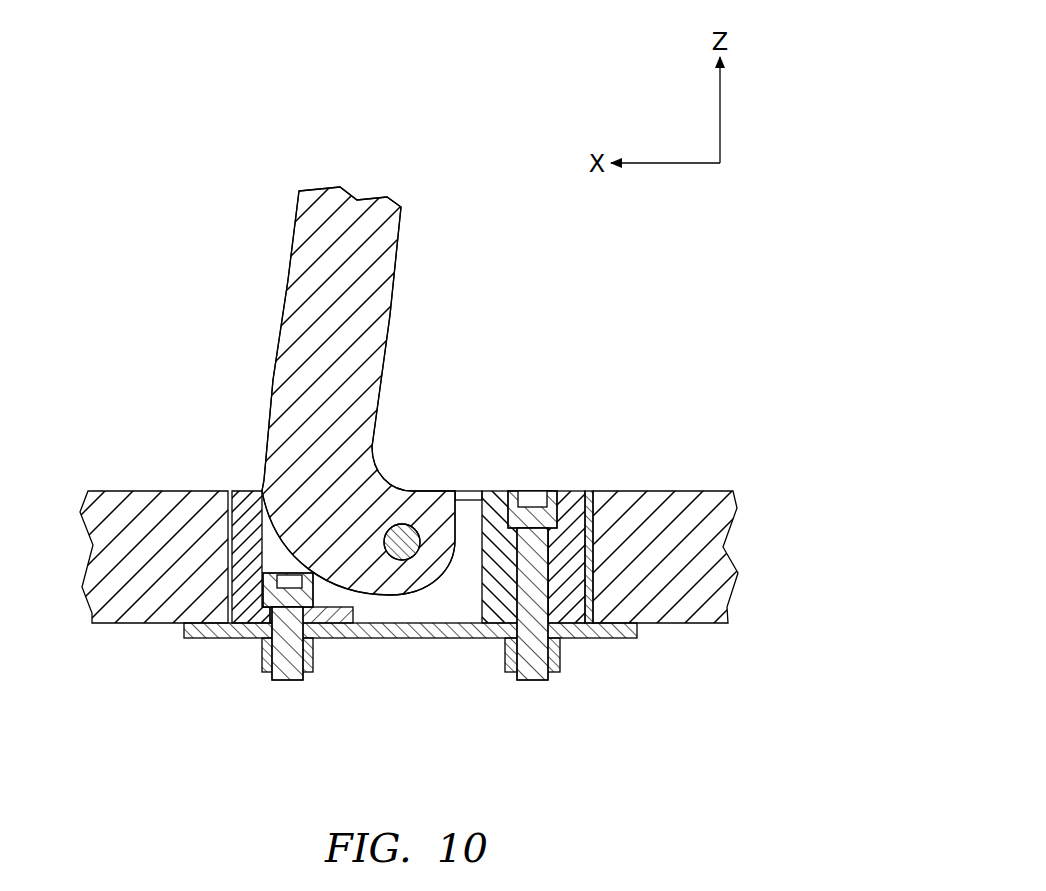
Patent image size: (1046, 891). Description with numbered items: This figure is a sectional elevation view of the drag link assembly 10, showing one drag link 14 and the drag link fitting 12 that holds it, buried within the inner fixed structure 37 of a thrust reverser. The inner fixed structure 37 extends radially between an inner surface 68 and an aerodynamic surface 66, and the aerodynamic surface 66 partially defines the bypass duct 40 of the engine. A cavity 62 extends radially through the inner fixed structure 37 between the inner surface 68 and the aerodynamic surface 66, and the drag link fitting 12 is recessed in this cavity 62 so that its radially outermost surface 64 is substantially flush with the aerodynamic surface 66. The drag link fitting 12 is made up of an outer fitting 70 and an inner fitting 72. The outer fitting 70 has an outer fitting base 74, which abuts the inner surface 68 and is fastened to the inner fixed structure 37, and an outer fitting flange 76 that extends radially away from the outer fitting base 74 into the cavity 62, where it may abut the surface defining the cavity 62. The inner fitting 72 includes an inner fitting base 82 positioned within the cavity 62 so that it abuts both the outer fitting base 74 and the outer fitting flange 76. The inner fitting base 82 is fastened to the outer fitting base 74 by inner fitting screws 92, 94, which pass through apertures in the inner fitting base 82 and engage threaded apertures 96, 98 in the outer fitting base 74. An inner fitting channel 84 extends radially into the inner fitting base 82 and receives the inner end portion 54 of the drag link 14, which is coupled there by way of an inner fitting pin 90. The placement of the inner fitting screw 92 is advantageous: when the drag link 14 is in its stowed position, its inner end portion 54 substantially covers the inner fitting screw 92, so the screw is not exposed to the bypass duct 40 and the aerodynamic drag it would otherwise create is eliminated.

The drag link assembly 10 is at (212, 307).
The drag link fitting 12 is at (478, 430).
The drag link 14 is at (407, 262).
The inner fixed structure 37 is at (162, 586).
The bypass duct 40 is at (105, 377).
The inner end portion 54 is at (375, 475).
The cavity 62 is at (453, 470).
The outermost surface 64 is at (570, 488).
The aerodynamic surface 66 is at (122, 491).
The inner surface 68 is at (125, 625).
The outer fitting 70 is at (202, 660).
The inner fitting 72 is at (498, 473).
The outer fitting base 74 is at (233, 640).
The outer fitting flange 76 is at (233, 520).
The inner fitting base 82 is at (238, 490).
The inner fitting channel 84 is at (471, 612).
The inner fitting pin 90 is at (395, 560).
The inner fitting screw 92 is at (287, 680).
The inner fitting screw 94 is at (532, 680).
The threaded aperture 96 is at (313, 660).
The threaded aperture 98 is at (558, 660).